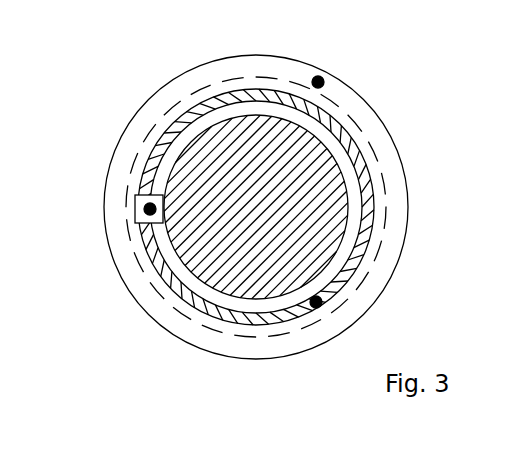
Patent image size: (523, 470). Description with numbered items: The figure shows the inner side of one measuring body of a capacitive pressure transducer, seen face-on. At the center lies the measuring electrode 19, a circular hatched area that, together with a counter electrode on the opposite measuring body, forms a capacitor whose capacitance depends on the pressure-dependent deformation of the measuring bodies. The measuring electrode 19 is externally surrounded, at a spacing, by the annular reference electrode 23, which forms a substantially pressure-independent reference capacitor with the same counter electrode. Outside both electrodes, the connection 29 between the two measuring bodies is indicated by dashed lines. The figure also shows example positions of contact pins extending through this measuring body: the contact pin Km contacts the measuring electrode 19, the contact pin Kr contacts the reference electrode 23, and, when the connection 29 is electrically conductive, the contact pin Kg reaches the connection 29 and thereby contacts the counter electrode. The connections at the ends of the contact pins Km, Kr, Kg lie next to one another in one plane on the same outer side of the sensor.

The connection 29 is at (202, 80).
The reference electrode 23 is at (172, 130).
The measuring electrode 19 is at (343, 173).
The contact pin Km is at (146, 205).
The contact pin Kg is at (320, 79).
The contact pin Kr is at (319, 306).